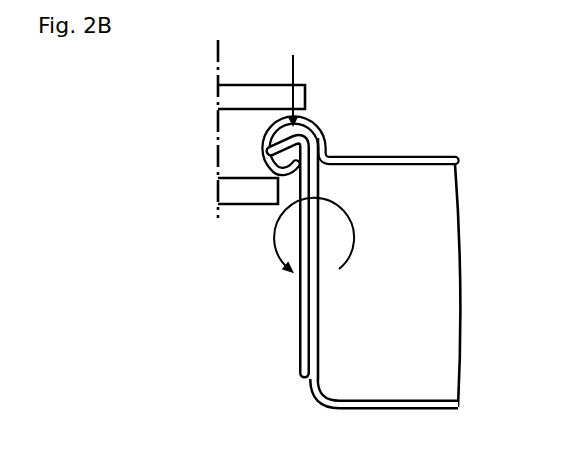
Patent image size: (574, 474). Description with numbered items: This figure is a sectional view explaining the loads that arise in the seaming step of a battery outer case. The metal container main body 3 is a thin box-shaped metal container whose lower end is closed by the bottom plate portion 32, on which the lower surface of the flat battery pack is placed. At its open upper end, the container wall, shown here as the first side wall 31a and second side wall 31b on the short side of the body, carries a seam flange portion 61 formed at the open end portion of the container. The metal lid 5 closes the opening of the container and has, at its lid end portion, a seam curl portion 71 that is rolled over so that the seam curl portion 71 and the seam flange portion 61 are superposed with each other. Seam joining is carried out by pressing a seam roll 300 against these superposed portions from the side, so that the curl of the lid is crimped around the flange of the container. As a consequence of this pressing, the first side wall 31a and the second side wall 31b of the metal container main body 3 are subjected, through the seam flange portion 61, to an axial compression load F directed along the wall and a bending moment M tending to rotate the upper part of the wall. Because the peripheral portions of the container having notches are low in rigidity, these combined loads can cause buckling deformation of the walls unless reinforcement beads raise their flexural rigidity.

The seam roll 300 is at (252, 84).
The seam curl portion 71 is at (310, 121).
The seam flange portion 61 is at (300, 144).
The metal lid 5 is at (383, 215).
The metal container main body 3 is at (338, 277).
The first side wall 31a is at (338, 245).
The second side wall 31b is at (338, 245).
The bottom plate portion 32 is at (383, 410).
The axial compression load F is at (296, 73).
The bending moment M is at (273, 252).